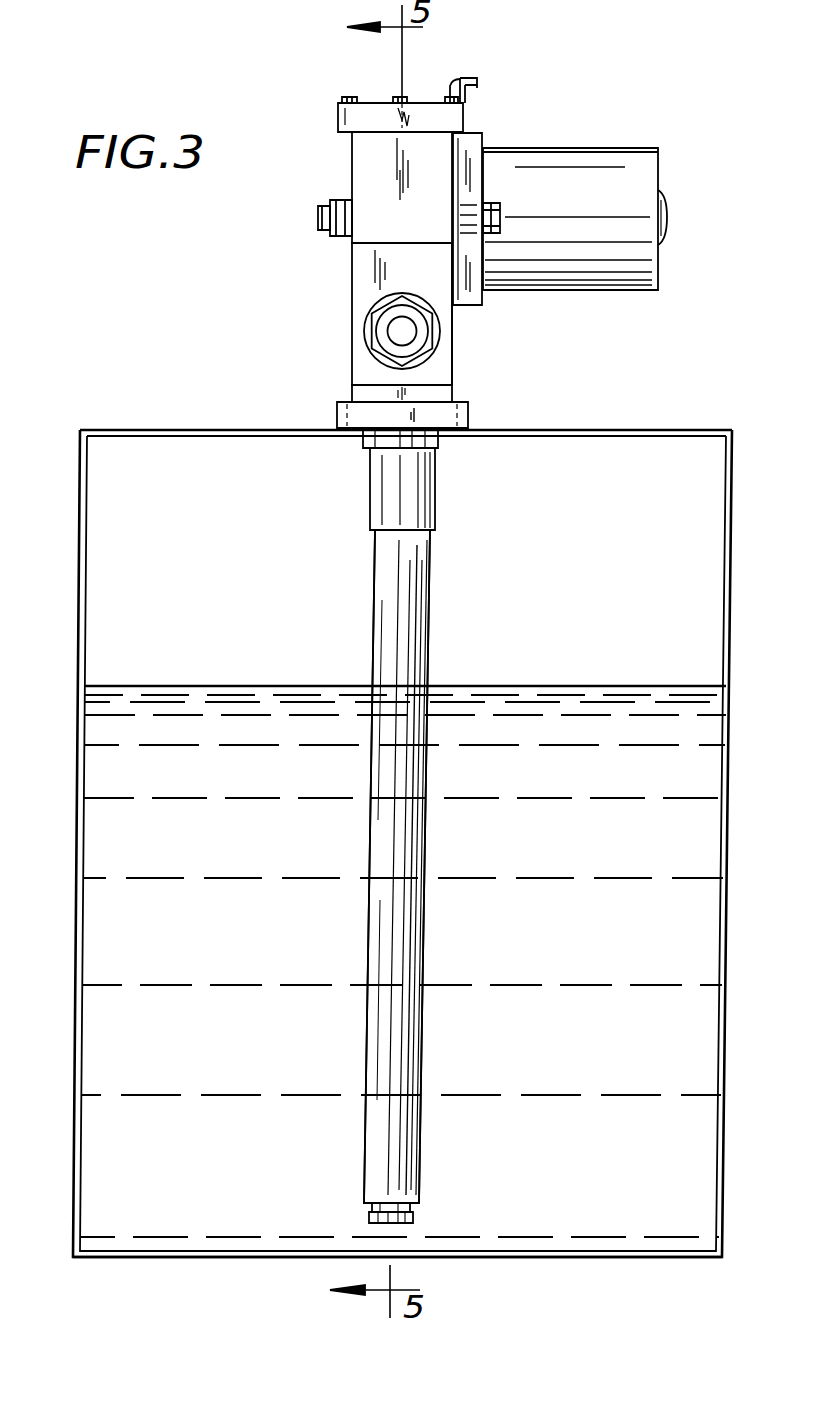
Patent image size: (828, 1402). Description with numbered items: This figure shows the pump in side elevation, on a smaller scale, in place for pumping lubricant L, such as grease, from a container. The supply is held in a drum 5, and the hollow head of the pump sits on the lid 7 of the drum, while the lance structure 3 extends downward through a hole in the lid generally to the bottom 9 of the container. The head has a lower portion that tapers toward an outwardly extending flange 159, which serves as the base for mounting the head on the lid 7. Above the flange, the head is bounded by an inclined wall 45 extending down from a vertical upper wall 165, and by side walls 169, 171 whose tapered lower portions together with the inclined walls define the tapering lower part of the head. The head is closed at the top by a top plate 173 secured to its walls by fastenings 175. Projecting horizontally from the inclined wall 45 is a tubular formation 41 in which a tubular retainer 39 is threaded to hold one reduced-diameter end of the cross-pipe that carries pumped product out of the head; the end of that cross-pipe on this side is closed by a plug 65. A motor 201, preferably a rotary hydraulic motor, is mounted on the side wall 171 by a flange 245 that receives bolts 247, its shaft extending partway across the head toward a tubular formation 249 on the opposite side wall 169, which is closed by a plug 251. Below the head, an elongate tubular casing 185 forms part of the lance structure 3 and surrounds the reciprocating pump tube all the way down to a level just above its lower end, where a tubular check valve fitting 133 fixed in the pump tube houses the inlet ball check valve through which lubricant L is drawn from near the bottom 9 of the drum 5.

The lance structure 3 is at (368, 859).
The drum 5 is at (77, 782).
The lid 7 is at (612, 432).
The bottom 9 is at (216, 1257).
The lubricant L is at (240, 683).
The tubular retainer 39 is at (385, 343).
The tubular formation 41 is at (405, 366).
The inclined wall 45 is at (366, 286).
The plug 65 is at (404, 331).
The check valve fitting 133 is at (372, 1218).
The flange 159 is at (337, 418).
The vertical upper wall 165 is at (372, 150).
The side wall 169 is at (352, 333).
The side wall 171 is at (456, 318).
The top plate 173 is at (374, 102).
The fastening 175 is at (402, 97).
The tubular casing 185 is at (367, 1000).
The motor 201 is at (662, 186).
The flange 245 is at (473, 132).
The bolts 247 is at (503, 213).
The tubular formation 249 is at (340, 243).
The plug 251 is at (318, 222).